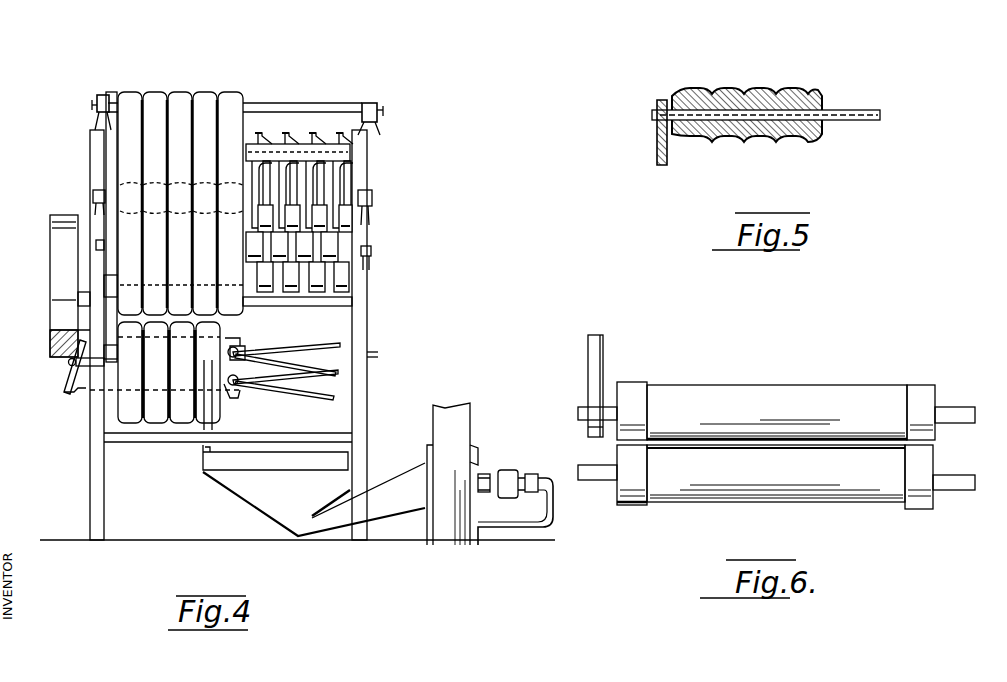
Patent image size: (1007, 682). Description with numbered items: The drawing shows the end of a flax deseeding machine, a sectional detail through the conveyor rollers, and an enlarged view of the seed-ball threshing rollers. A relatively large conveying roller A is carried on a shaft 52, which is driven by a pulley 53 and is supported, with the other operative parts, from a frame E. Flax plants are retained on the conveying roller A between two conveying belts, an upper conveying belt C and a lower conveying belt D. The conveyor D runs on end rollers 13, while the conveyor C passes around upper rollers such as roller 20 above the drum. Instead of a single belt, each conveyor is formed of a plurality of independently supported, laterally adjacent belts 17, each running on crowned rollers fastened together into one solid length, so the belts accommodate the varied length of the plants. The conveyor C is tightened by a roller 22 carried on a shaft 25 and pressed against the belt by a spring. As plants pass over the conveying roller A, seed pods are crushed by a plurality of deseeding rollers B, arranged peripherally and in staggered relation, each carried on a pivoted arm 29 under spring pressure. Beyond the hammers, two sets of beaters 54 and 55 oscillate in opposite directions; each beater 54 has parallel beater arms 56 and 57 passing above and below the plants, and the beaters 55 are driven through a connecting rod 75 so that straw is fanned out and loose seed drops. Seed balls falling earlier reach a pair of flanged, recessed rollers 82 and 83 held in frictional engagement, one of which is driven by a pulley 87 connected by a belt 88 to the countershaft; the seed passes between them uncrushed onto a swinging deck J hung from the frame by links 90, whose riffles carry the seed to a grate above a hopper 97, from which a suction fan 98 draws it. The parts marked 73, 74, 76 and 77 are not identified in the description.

In FIG. 4, the upper roller 20 is at (248, 101).
In FIG. 4, the independent belt 17 is at (124, 203).
In FIG. 5, the independent belt 17 is at (747, 88).
In FIG. 4, the conveying belt C is at (125, 258).
In FIG. 5, the conveying belt C is at (716, 90).
In FIG. 4, the end roller 13 is at (138, 426).
In FIG. 4, the conveying belt D is at (147, 487).
In FIG. 4, the frame E is at (78, 436).
In FIG. 4, the guide member 74 is at (212, 395).
In FIG. 4, the pulley 53 is at (56, 243).
In FIG. 4, the shaft 52 is at (120, 302).
In FIG. 4, the belt tightening roller 22 is at (62, 330).
In FIG. 4, the link 77 is at (80, 340).
In FIG. 4, the lever 76 is at (68, 372).
In FIG. 4, the connecting rod 75 is at (70, 394).
In FIG. 4, the deseeding roller B is at (345, 212).
In FIG. 4, the pivoted arm 29 is at (306, 182).
In FIG. 4, the conveying roller A is at (344, 318).
In FIG. 4, the shaft 25 is at (275, 298).
In FIG. 4, the beater arm 56 is at (312, 344).
In FIG. 4, the pivot block 73 is at (300, 338).
In FIG. 4, the beater arm 57 is at (330, 382).
In FIG. 4, the beater 55 is at (275, 375).
In FIG. 4, the beater 54 is at (305, 382).
In FIG. 4, the link 90 is at (212, 471).
In FIG. 4, the swinging deck J is at (289, 460).
In FIG. 4, the hopper 97 is at (300, 524).
In FIG. 4, the suction fan 98 is at (460, 470).
In FIG. 6, the roller 82 is at (770, 384).
In FIG. 6, the roller 83 is at (716, 489).
In FIG. 6, the belt 88 is at (603, 343).
In FIG. 6, the pulley 87 is at (595, 397).